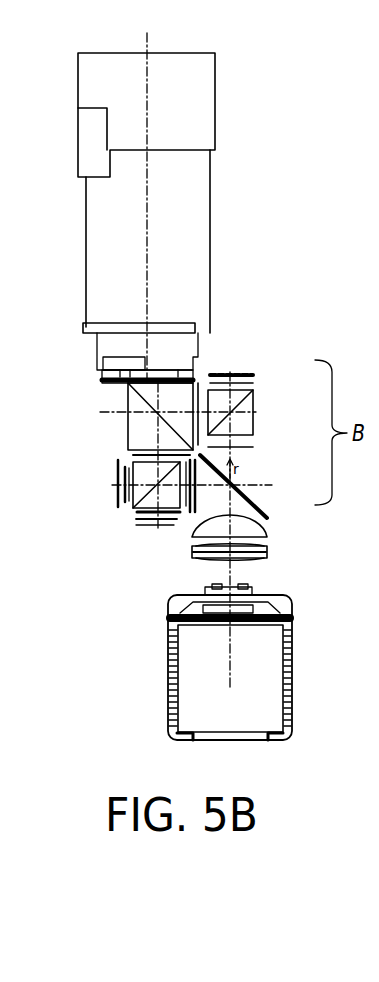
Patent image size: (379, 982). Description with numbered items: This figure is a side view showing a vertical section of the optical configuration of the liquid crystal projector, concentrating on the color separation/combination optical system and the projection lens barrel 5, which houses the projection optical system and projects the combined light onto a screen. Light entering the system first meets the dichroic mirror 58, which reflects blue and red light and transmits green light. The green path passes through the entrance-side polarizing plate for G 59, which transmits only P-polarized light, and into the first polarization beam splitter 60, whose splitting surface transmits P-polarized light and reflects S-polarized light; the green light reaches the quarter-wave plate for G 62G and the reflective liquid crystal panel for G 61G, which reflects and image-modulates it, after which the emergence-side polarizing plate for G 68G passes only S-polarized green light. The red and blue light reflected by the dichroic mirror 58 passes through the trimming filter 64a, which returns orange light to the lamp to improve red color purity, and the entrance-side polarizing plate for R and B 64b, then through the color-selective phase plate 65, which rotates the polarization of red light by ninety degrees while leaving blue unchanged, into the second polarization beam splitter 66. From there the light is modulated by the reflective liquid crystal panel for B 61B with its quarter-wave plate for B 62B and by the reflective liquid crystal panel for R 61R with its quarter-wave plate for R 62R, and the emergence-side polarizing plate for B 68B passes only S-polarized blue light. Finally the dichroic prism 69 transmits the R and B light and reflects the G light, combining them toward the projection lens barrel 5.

The projection lens barrel 5 is at (210, 272).
The dichroic mirror 58 is at (268, 517).
The entrance-side polarizing plate for G 59 is at (254, 447).
The first polarization beam splitter 60 is at (254, 411).
The reflective liquid crystal panel for G 61G is at (252, 374).
The quarter-wave plate for G 62G is at (254, 383).
The emergence-side polarizing plate for G 68G is at (199, 383).
The dichroic prism 69 is at (128, 418).
The emergence-side polarizing plate for B 68B is at (130, 447).
The second polarization beam splitter 66 is at (148, 472).
The reflective liquid crystal panel for B 61B is at (116, 471).
The quarter-wave plate for B 62B is at (120, 505).
The color-selective phase plate 65 is at (170, 514).
The quarter-wave plate for R 62R is at (146, 520).
The reflective liquid crystal panel for R 61R is at (138, 526).
The trimming filter 64a is at (194, 512).
The entrance-side polarizing plate for R and B 64b is at (189, 515).